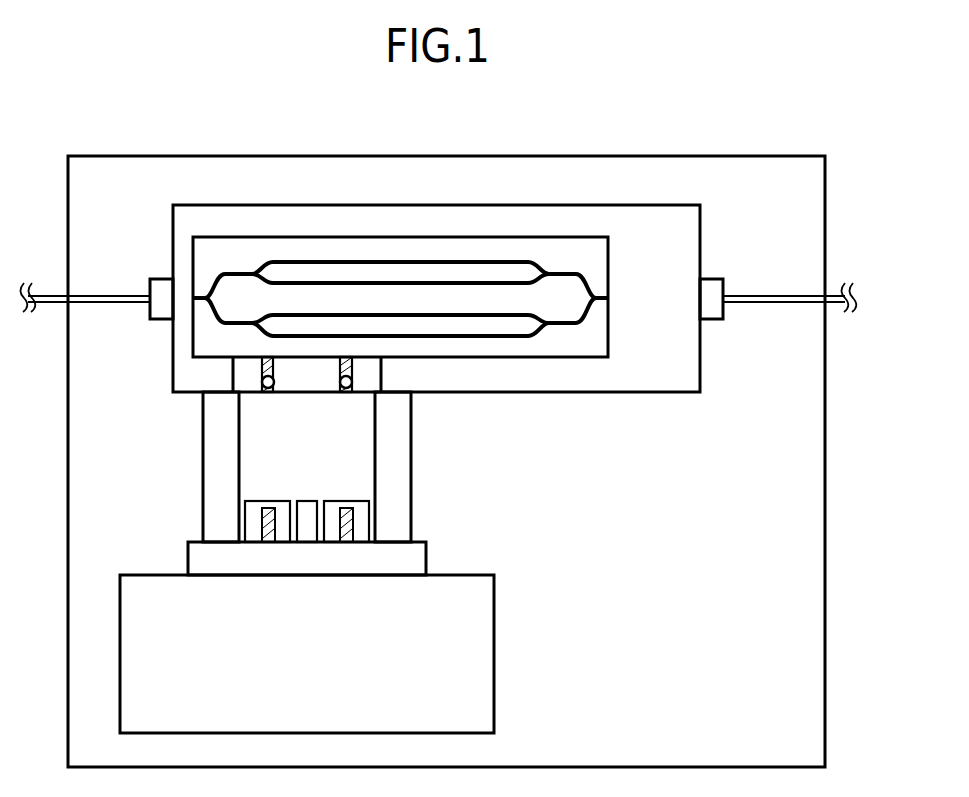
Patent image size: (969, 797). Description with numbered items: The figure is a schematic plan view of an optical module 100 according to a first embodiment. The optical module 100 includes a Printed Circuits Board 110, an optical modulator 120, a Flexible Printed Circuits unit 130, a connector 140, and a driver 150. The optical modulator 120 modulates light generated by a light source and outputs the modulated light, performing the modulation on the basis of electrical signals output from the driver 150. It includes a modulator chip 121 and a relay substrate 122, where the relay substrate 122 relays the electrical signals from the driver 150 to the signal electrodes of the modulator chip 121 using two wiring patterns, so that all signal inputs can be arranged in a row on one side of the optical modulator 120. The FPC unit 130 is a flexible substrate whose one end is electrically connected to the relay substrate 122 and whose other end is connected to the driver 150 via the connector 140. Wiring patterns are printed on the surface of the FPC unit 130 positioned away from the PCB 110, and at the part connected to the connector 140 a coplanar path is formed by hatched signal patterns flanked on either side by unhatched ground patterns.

The optical module 100 is at (838, 186).
The Printed Circuits Board 110 is at (742, 155).
The optical modulator 120 is at (635, 204).
The modulator chip 121 is at (610, 253).
The relay substrate 122 is at (381, 381).
The FPC unit 130 is at (411, 438).
The connector 140 is at (426, 560).
The driver 150 is at (494, 618).